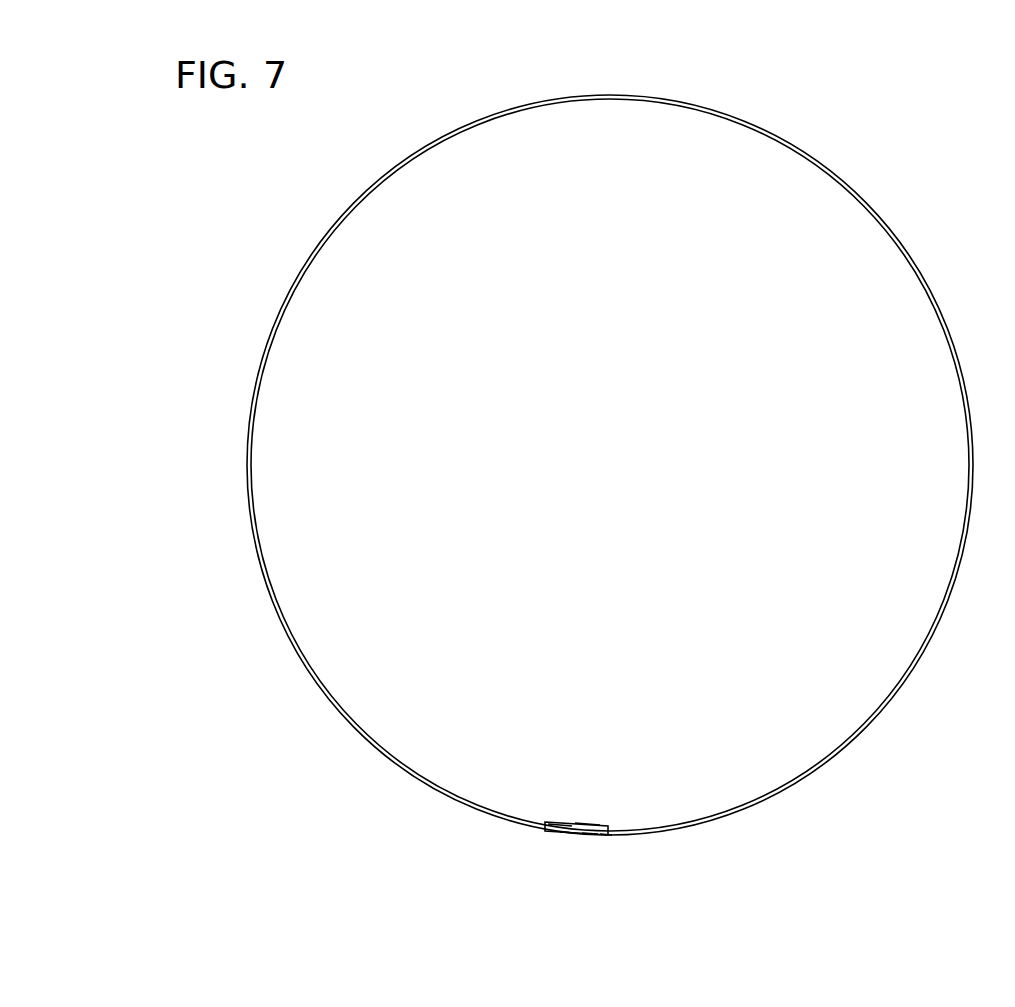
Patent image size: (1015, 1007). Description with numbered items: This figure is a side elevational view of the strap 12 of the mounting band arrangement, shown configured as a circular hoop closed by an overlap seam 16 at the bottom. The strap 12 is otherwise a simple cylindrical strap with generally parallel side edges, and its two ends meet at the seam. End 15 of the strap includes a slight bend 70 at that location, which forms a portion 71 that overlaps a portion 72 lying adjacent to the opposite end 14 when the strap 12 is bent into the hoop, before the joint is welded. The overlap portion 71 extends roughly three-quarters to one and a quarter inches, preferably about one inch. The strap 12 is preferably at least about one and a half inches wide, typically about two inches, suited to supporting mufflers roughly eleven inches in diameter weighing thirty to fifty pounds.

The strap 12 is at (948, 628).
The end 14 is at (558, 823).
The end 15 is at (589, 834).
The overlap seam 16 is at (548, 838).
The slight bend 70 is at (610, 834).
The overlap portion 71 is at (566, 834).
The portion 72 is at (599, 786).